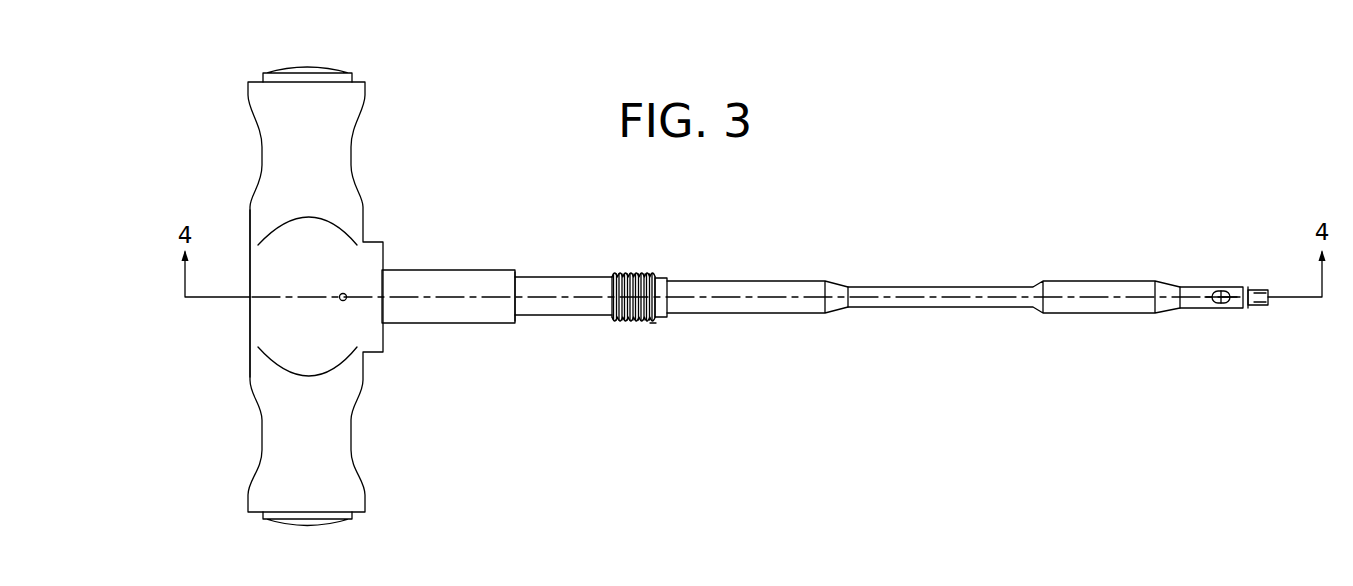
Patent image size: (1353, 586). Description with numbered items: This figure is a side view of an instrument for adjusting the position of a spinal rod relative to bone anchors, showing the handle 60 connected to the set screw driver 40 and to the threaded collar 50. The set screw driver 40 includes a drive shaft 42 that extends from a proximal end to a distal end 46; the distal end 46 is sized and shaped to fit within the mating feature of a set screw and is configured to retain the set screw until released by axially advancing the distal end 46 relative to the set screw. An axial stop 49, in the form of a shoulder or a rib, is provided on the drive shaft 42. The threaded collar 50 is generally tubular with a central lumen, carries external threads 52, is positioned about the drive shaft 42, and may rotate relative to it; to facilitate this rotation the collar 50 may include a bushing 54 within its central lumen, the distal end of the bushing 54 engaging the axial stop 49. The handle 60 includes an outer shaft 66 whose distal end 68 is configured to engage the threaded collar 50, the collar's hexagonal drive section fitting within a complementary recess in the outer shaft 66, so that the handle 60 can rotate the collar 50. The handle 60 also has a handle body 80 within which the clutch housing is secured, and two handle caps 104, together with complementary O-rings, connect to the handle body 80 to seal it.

The handle cap 104 is at (323, 72).
The handle 60 is at (348, 208).
The handle body 80 is at (250, 252).
The outer shaft 66 is at (453, 280).
The distal end of outer shaft 68 is at (505, 278).
The threaded collar 50 is at (573, 266).
The threads 52 is at (632, 270).
The bushing 54 is at (663, 320).
The axial stop 49 is at (663, 320).
The set screw driver 40 is at (792, 260).
The drive shaft 42 is at (880, 288).
The distal end of drive shaft 46 is at (1250, 266).